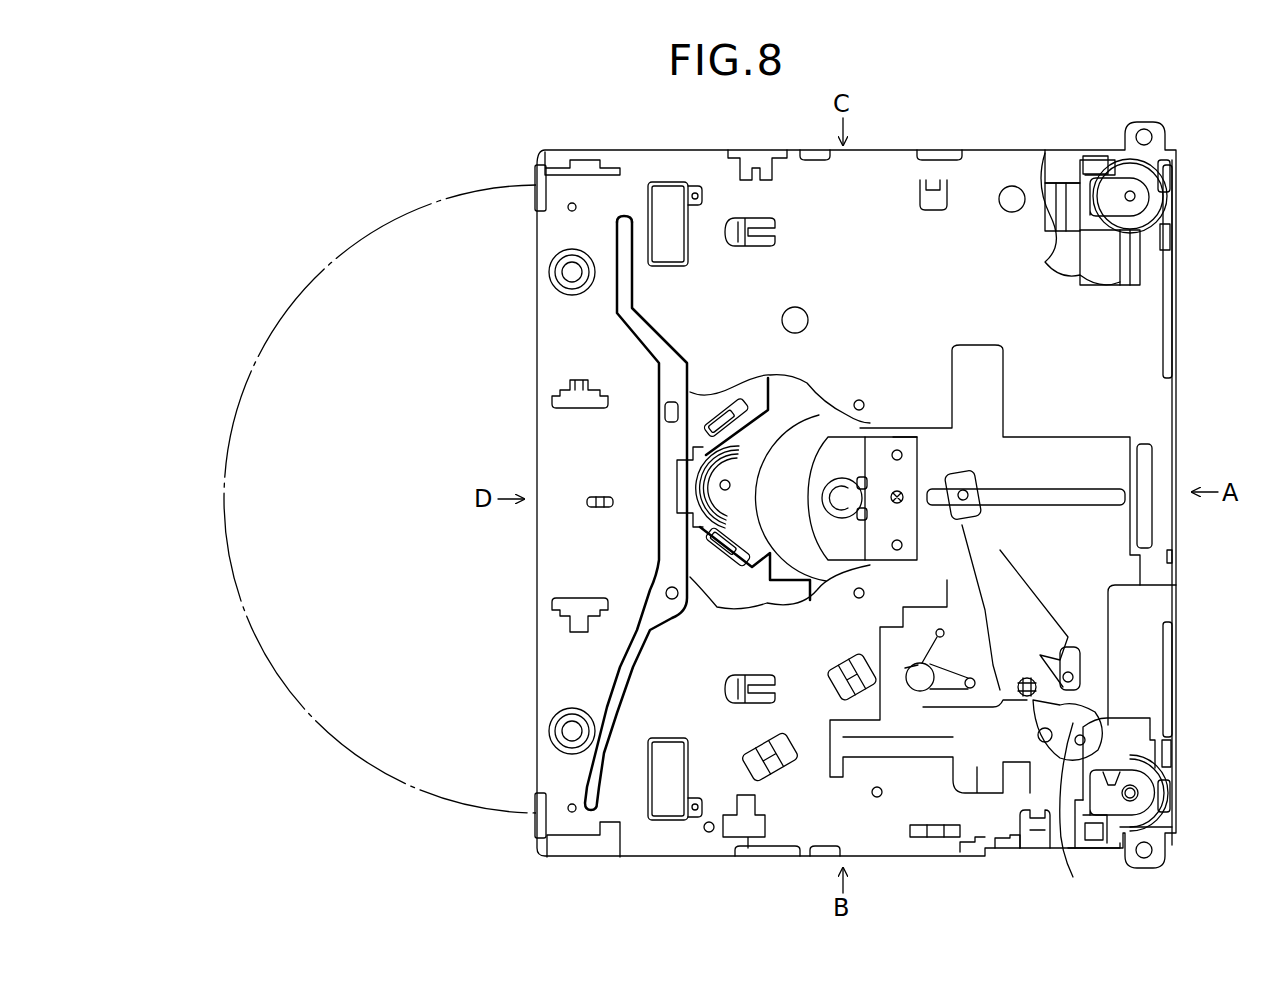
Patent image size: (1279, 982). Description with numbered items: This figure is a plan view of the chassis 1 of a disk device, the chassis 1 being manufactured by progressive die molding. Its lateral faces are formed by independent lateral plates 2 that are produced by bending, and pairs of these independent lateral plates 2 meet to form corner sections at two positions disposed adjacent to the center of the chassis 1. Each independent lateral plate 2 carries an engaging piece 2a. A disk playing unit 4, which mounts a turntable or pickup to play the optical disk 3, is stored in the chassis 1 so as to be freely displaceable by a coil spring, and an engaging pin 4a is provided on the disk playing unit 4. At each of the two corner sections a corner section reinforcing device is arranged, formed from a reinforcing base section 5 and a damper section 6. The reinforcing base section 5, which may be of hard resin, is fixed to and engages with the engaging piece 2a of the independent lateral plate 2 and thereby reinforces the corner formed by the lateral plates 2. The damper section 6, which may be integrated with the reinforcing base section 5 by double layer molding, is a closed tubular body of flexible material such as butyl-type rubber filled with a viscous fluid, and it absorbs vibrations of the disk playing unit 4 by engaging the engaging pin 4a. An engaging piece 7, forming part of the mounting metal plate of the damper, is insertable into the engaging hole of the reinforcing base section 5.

The chassis 1 is at (976, 148).
The independent lateral plates 2 is at (1046, 155).
The engaging piece 2a is at (1110, 165).
The optical disk 3 is at (351, 250).
The disk playing unit 4 is at (787, 397).
The engaging pin 4a is at (1134, 793).
The reinforcing base section 5 is at (745, 445).
The damper section 6 is at (702, 488).
The engaging piece 7 is at (745, 390).